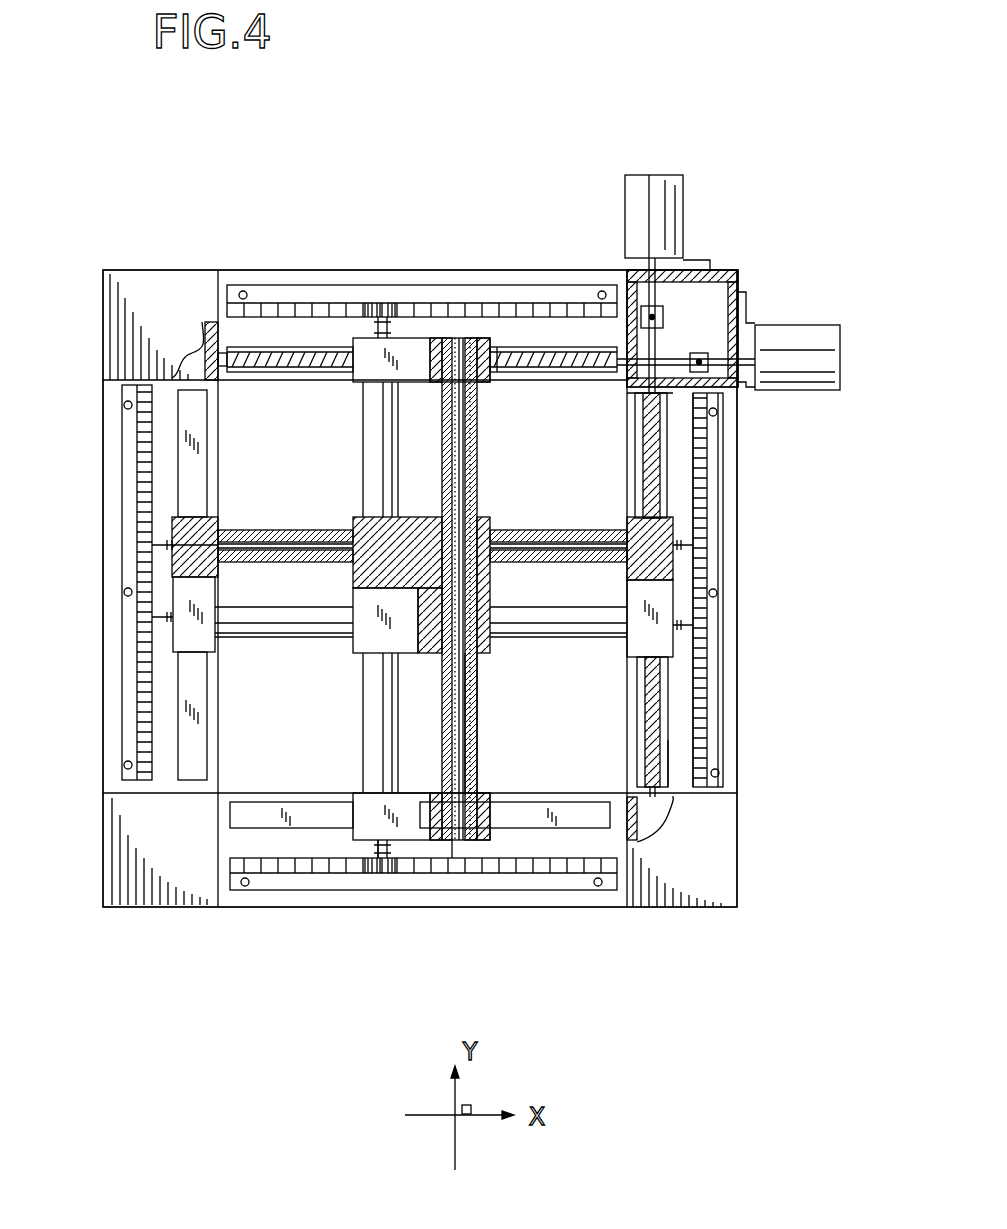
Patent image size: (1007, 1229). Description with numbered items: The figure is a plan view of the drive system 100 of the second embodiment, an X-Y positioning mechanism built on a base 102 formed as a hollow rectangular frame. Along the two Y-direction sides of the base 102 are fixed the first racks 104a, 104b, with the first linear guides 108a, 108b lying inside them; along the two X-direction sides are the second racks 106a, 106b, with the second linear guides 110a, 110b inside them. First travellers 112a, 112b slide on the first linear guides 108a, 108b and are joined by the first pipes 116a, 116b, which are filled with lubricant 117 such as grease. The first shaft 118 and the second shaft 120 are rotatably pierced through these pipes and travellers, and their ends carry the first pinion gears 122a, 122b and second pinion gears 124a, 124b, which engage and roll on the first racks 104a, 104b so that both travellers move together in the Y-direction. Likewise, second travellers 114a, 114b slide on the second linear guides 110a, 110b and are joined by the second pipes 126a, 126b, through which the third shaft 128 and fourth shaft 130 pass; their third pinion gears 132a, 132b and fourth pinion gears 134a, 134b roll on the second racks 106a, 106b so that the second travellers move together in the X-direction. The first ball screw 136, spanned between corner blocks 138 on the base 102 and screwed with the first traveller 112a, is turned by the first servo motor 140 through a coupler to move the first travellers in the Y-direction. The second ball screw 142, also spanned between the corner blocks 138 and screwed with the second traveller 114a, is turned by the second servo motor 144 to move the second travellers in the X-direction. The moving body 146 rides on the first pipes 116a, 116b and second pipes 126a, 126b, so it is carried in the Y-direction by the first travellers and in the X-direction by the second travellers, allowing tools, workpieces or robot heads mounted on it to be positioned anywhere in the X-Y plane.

The drive system 100 is at (263, 187).
The base 102 is at (737, 712).
The first rack 104a is at (700, 470).
The first rack 104b is at (143, 460).
The second rack 106a is at (327, 298).
The second rack 106b is at (303, 870).
The first linear guide 108a is at (668, 757).
The first linear guide 108b is at (185, 705).
The second linear guide 110a is at (555, 347).
The second linear guide 110b is at (605, 830).
The first traveller 112a is at (665, 598).
The first traveller 112b is at (180, 645).
The second traveller 114a is at (458, 300).
The second traveller 114b is at (410, 842).
The first pipe 116a is at (582, 545).
The first pipe 116b is at (575, 632).
The lubricant 117 is at (265, 540).
The first shaft 118 is at (517, 545).
The second shaft 120 is at (698, 672).
The first pinion gear 122a is at (700, 545).
The first pinion gear 122b is at (150, 545).
The second pinion gear 124a is at (700, 625).
The second pinion gear 124b is at (150, 618).
The second pipe 126a is at (472, 785).
The second pipe 126b is at (372, 745).
The third shaft 128 is at (443, 693).
The fourth shaft 130 is at (385, 850).
The third pinion gear 132a is at (500, 340).
The third pinion gear 132b is at (462, 848).
The fourth pinion gear 134a is at (410, 352).
The fourth pinion gear 134b is at (383, 852).
The first ball screw 136 is at (650, 440).
The corner block 138 is at (148, 290).
The first servo motor 140 is at (686, 176).
The second ball screw 142 is at (310, 367).
The second servo motor 144 is at (795, 345).
The moving body 146 is at (493, 600).